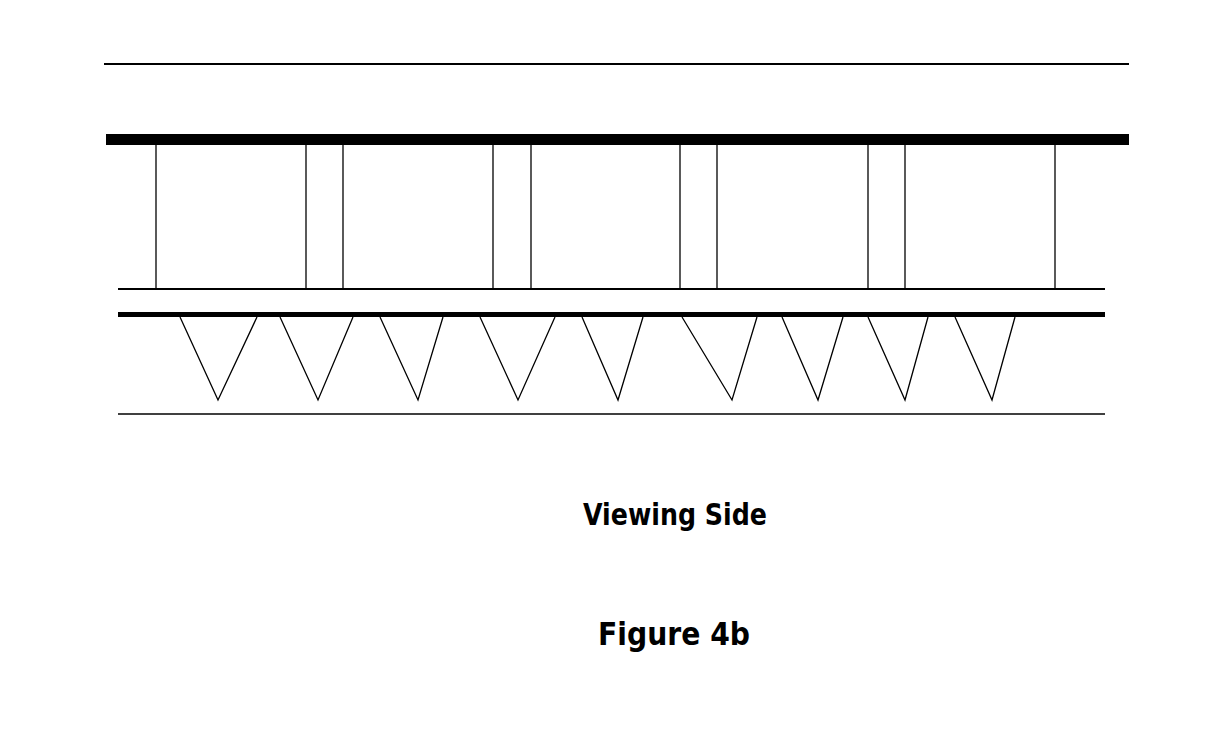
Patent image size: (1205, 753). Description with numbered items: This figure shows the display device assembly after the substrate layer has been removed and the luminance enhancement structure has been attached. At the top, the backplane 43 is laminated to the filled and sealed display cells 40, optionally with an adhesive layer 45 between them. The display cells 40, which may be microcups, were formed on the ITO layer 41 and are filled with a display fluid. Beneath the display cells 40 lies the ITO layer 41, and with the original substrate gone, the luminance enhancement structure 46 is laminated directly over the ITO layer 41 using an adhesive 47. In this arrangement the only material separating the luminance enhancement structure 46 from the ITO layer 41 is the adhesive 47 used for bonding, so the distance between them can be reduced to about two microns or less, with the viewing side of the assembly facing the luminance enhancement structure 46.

The display cells 40 is at (605, 217).
The ITO layer 41 is at (1088, 300).
The backplane 43 is at (1088, 88).
The adhesive layer 45 is at (243, 126).
The luminance enhancement structure 46 is at (157, 387).
The adhesive 47 is at (1068, 326).